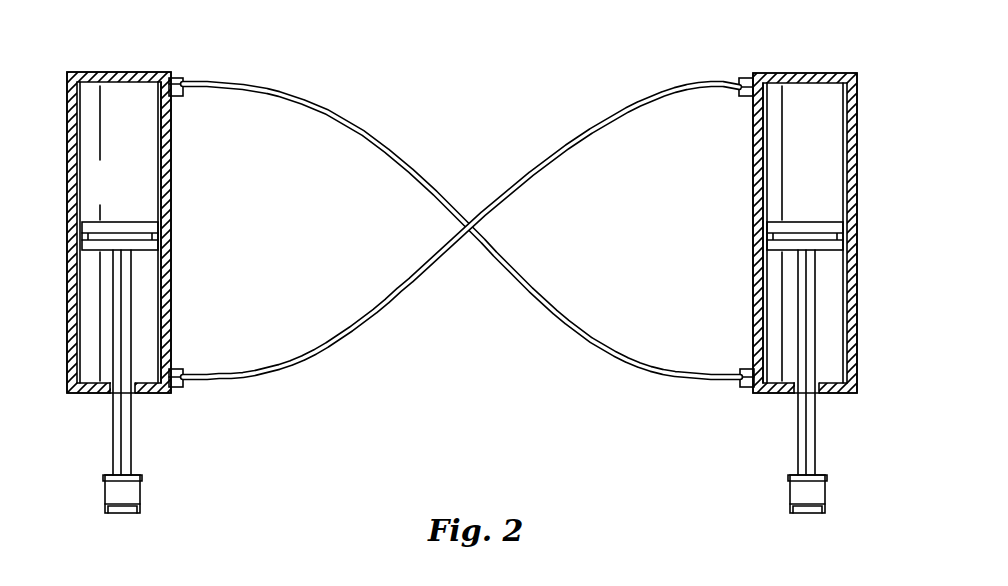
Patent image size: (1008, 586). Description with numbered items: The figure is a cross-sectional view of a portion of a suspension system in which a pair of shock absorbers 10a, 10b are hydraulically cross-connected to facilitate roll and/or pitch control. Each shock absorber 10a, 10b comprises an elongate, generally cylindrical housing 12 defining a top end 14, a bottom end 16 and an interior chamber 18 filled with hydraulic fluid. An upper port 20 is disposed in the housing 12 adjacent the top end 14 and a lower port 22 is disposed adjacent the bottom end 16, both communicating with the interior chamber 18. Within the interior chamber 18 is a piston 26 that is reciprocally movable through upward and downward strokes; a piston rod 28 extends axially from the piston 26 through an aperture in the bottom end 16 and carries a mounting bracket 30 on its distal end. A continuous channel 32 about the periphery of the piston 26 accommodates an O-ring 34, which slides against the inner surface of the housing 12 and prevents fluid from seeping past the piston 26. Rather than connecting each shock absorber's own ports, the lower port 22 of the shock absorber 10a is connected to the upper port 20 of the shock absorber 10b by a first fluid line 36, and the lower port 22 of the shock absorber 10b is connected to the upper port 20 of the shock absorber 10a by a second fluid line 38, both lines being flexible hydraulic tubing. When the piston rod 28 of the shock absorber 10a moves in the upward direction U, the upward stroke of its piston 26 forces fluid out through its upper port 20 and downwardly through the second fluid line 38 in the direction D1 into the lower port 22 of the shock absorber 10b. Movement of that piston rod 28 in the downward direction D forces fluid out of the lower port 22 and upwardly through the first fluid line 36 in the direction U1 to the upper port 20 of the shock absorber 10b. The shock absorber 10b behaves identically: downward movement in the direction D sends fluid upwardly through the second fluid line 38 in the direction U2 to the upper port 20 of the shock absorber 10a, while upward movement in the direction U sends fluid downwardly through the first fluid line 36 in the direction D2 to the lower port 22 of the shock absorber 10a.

The shock absorber 10a is at (144, 64).
The shock absorber 10b is at (811, 70).
The housing 12 is at (176, 250).
The top end 14 is at (95, 46).
The bottom end 16 is at (154, 398).
The interior chamber 18 is at (147, 301).
The upper port 20 is at (183, 80).
The lower port 22 is at (176, 370).
The piston 26 is at (110, 222).
The piston rod 28 is at (119, 423).
The mounting bracket 30 is at (128, 513).
The continuous channel 32 is at (122, 233).
The O-ring 34 is at (127, 234).
The first fluid line 36 is at (602, 125).
The second fluid line 38 is at (353, 128).
The upward direction U is at (158, 428).
The downward direction D is at (93, 428).
The direction U1 is at (407, 260).
The direction U2 is at (435, 172).
The direction D1 is at (528, 318).
The direction D2 is at (529, 155).